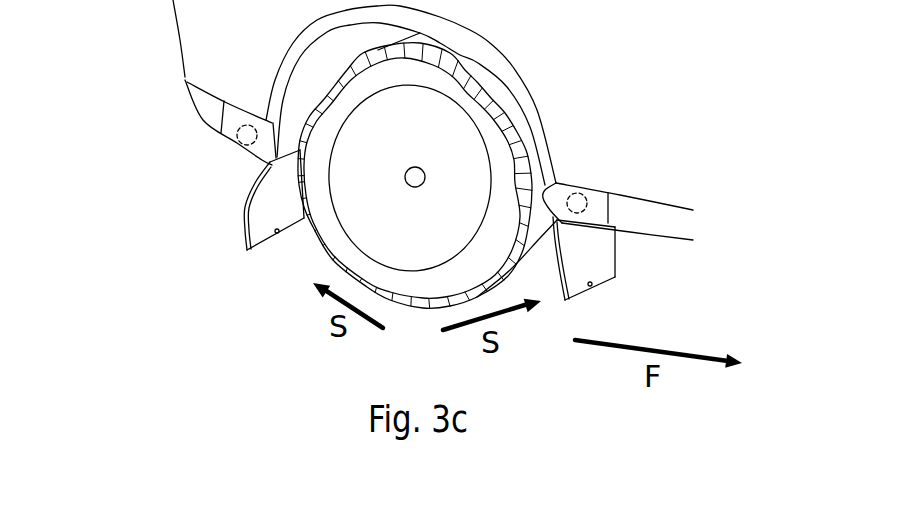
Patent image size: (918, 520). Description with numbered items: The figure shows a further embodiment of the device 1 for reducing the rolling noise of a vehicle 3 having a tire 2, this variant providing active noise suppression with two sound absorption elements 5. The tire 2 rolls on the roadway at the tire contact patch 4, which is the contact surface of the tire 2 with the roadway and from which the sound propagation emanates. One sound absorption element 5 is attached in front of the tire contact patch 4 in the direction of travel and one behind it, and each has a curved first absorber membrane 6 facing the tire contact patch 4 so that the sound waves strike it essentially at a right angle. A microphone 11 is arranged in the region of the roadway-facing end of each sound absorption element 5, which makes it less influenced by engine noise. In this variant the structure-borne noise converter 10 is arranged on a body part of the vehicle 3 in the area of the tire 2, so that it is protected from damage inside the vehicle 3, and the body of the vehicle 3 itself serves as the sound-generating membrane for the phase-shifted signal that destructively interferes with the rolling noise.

The device 1 is at (142, 163).
The tire 2 is at (533, 157).
The vehicle 3 is at (148, 75).
The tire contact patch 4 is at (403, 326).
The sound absorption element 5 is at (258, 212).
The first absorber membrane 6 is at (255, 242).
The structure-borne noise converter 10 is at (244, 125).
The microphone 11 is at (279, 235).